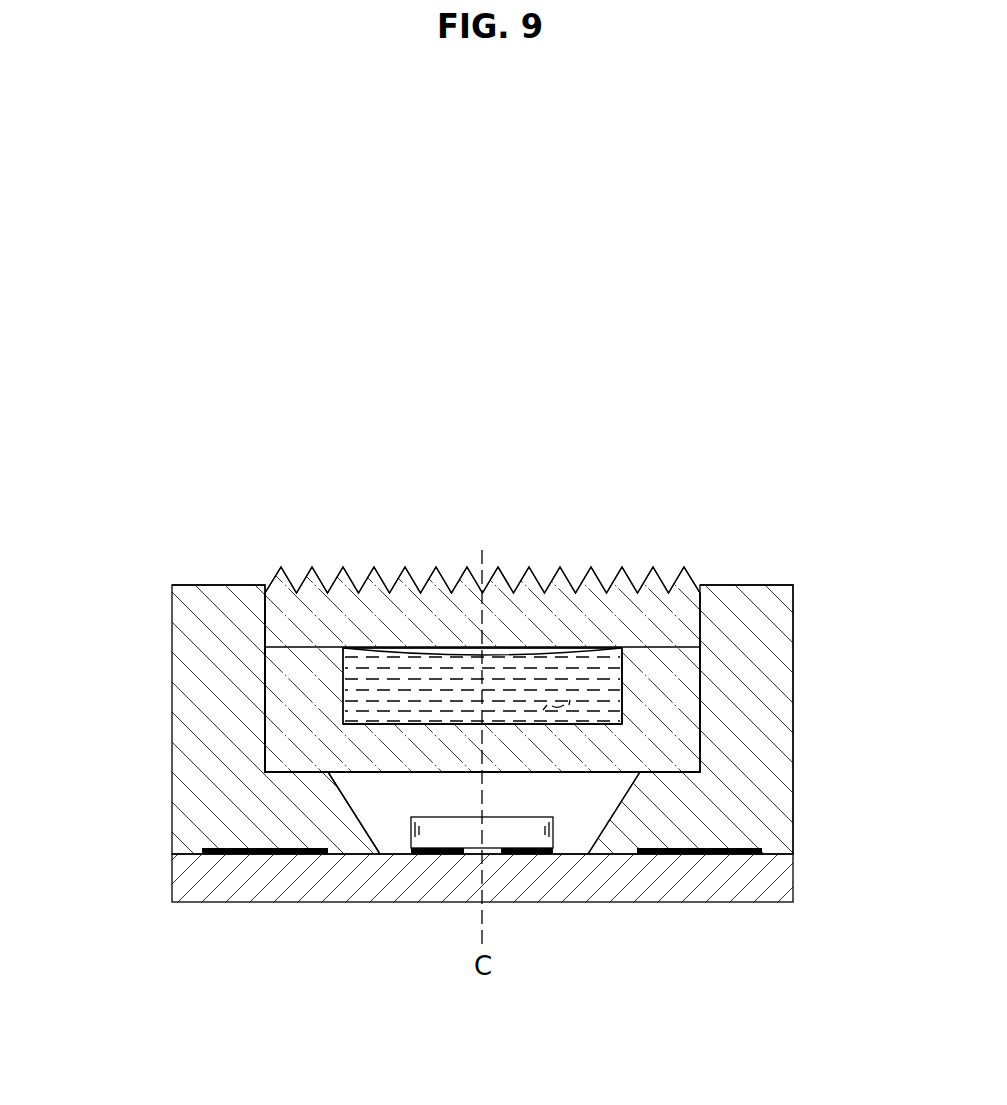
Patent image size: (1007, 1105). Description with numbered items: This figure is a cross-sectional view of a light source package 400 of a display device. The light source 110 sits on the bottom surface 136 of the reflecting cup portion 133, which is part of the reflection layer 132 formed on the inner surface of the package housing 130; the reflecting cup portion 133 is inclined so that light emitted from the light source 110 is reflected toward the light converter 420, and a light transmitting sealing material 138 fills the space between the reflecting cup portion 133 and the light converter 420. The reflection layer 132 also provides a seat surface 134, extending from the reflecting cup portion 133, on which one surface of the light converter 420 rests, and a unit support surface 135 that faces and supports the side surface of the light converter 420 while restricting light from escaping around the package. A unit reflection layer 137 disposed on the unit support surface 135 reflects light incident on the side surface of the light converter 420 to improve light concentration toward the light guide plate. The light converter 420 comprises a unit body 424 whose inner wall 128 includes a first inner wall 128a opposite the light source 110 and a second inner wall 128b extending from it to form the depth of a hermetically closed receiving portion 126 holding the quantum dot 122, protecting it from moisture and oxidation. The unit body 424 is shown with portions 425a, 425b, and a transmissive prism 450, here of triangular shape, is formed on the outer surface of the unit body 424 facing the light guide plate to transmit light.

The light source package 400 is at (709, 510).
The light converter 420 is at (309, 545).
The unit body 424 is at (557, 495).
The first body portion 425a is at (457, 617).
The second body portion 425b is at (513, 748).
The prism 450 is at (598, 565).
The quantum dot 122 is at (390, 670).
The receiving portion 126 is at (559, 706).
The inner wall 128 is at (882, 700).
The first inner wall 128a is at (585, 724).
The second inner wall 128b is at (621, 678).
The package housing 130 is at (754, 602).
The reflection layer 132 is at (96, 613).
The reflecting cup portion 133 is at (358, 820).
The seat surface 134 is at (313, 770).
The unit support surface 135 is at (268, 667).
The unit reflection layer 137 is at (277, 617).
The sealing material 138 is at (385, 812).
The bottom surface 136 is at (587, 855).
The light source 110 is at (411, 836).